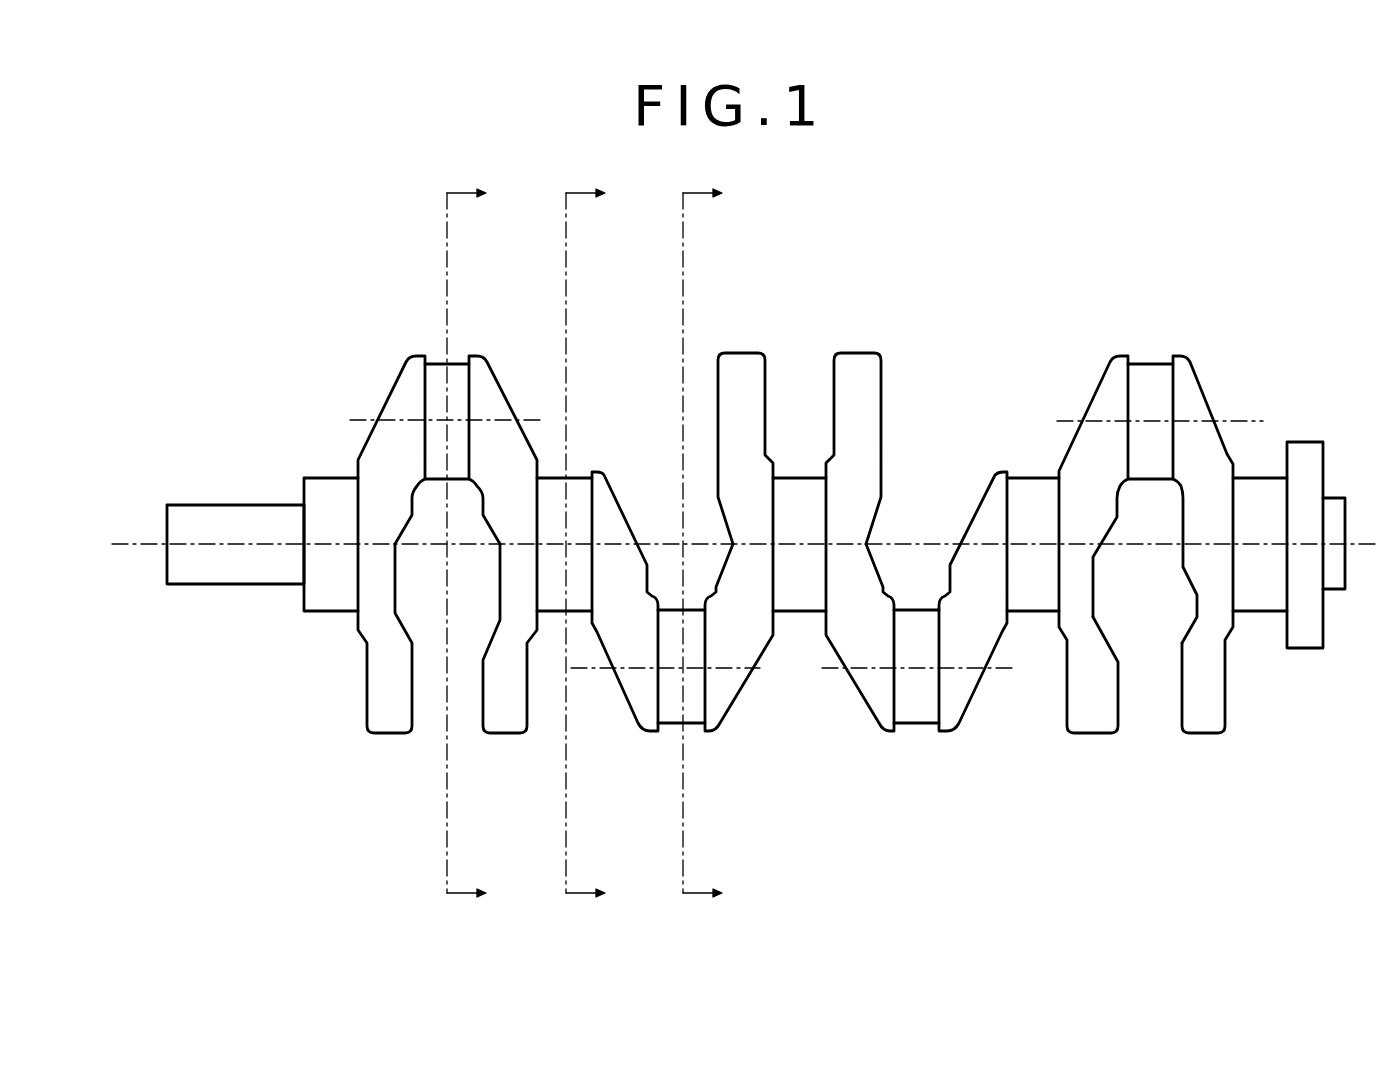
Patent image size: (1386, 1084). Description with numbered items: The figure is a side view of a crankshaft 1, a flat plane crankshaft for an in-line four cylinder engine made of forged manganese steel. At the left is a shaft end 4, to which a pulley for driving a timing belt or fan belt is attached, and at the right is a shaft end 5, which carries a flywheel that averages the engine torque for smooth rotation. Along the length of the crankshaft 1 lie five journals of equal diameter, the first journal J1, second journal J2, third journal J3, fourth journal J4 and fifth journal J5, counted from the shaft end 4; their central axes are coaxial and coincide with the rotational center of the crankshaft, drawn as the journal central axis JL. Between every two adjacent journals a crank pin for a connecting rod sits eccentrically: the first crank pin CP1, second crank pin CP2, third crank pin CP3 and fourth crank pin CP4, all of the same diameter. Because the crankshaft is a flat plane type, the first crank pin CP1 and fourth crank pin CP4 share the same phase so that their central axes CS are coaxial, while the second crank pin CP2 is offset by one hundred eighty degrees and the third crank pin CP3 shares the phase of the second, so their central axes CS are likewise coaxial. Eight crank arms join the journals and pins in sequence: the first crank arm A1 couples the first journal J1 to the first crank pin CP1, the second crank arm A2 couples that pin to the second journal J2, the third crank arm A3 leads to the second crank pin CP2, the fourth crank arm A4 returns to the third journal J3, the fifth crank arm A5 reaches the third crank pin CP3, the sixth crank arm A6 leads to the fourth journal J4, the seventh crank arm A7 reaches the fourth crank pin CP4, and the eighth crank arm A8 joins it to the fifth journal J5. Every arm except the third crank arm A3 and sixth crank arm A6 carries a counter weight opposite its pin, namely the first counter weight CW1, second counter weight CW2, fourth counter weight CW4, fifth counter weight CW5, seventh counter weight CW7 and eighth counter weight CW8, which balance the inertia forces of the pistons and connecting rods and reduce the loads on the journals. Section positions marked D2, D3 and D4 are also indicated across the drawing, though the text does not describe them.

The crankshaft 1 is at (985, 338).
The shaft end 4 is at (218, 505).
The shaft end 5 is at (1335, 490).
The journal central axis JL is at (133, 541).
The first journal J1 is at (333, 612).
The second journal J2 is at (550, 612).
The third journal J3 is at (808, 477).
The fourth journal J4 is at (1034, 612).
The fifth journal J5 is at (1259, 612).
The first crank pin CP1 is at (435, 360).
The second crank pin CP2 is at (669, 726).
The third crank pin CP3 is at (915, 726).
The fourth crank pin CP4 is at (1153, 363).
The first crank arm A1 is at (394, 389).
The second crank arm A2 is at (503, 395).
The third crank arm A3 is at (618, 694).
The fourth crank arm A4 is at (731, 726).
The fifth crank arm A5 is at (866, 712).
The sixth crank arm A6 is at (972, 698).
The seventh crank arm A7 is at (1108, 372).
The eighth crank arm A8 is at (1200, 390).
The first counter weight CW1 is at (387, 745).
The second counter weight CW2 is at (503, 745).
The fourth counter weight CW4 is at (745, 353).
The fifth counter weight CW5 is at (860, 353).
The seventh counter weight CW7 is at (1096, 745).
The eighth counter weight CW8 is at (1201, 745).
The central axis CS is at (357, 425).
The section position D2 is at (485, 545).
The section position D3 is at (604, 545).
The section position D4 is at (721, 545).